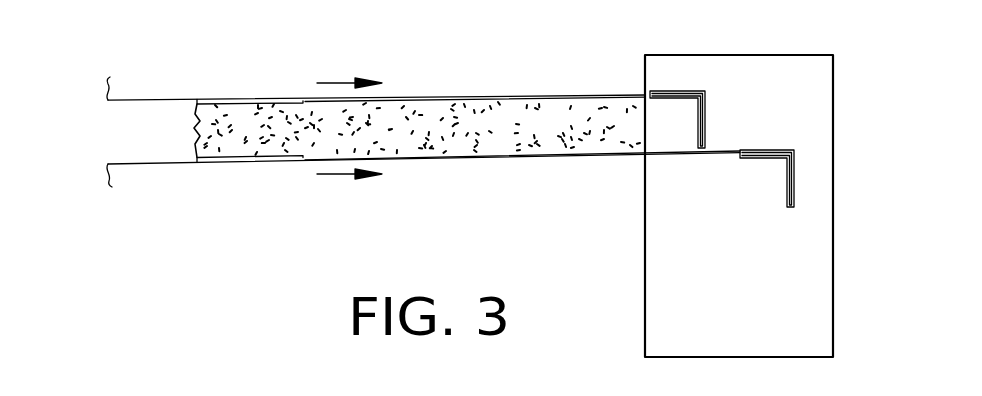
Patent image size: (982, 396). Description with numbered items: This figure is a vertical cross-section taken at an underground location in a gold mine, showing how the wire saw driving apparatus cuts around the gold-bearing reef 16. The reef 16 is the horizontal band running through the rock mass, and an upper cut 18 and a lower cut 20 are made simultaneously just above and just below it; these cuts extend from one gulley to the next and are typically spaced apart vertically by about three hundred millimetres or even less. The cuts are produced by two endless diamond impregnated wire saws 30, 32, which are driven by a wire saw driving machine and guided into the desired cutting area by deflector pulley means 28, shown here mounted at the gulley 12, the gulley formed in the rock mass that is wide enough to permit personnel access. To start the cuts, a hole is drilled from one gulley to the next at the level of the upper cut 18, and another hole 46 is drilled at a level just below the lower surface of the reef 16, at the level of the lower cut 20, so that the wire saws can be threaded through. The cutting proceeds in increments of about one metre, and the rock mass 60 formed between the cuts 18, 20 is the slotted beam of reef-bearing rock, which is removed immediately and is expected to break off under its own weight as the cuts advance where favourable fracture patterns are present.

The gulley 12 is at (748, 299).
The gold-bearing reef 16 is at (345, 133).
The upper cut 18 is at (227, 99).
The lower cut 20 is at (227, 163).
The deflector pulley means 28 is at (780, 172).
The wire saw 30 is at (541, 95).
The wire saw 32 is at (599, 157).
The hole 46 is at (192, 119).
The rock mass 60 is at (418, 138).